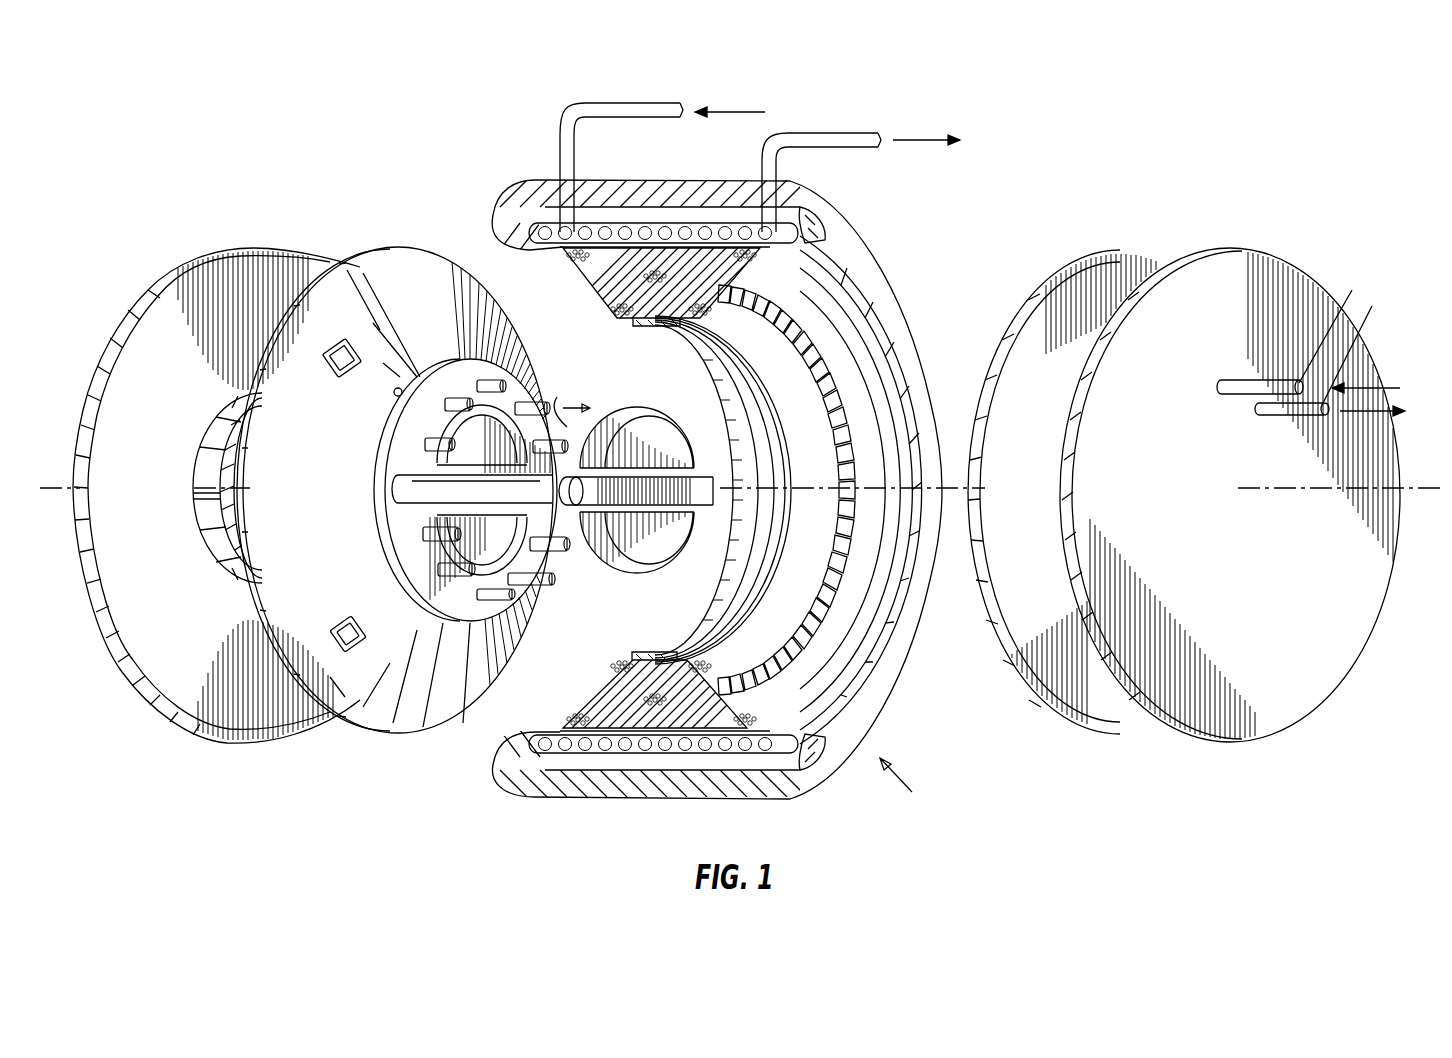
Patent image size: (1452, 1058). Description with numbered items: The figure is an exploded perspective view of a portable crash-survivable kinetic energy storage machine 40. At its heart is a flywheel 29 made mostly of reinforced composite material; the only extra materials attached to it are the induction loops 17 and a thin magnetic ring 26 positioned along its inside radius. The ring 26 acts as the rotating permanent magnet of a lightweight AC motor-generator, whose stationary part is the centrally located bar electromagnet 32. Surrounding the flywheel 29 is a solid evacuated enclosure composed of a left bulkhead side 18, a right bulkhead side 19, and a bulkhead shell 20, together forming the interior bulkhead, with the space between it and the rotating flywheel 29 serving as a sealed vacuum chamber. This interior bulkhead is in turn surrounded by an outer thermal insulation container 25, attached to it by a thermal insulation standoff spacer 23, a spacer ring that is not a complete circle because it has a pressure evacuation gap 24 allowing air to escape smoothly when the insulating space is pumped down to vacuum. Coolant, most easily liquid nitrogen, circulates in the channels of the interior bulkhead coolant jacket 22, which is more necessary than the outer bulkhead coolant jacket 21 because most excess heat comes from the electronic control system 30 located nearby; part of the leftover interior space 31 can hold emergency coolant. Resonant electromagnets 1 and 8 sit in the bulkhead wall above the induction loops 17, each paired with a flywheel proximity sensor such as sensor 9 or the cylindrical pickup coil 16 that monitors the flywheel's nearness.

The resonant electromagnet 1 is at (345, 340).
The resonant electromagnet unit 8 is at (337, 620).
The flywheel proximity sensor 9 is at (396, 396).
The cylindrical coil 16 is at (398, 590).
The induction loops 17 is at (830, 375).
The left bulkhead side 18 is at (405, 262).
The right bulkhead side 19 is at (1055, 690).
The bulkhead shell 20 is at (780, 240).
The outer bulkhead coolant jacket 21 is at (826, 131).
The interior bulkhead coolant jacket 22 is at (505, 388).
The thermal insulation standoff spacer 23 is at (205, 520).
The pressure evacuation gap 24 is at (195, 490).
The outer thermal insulation container 25 is at (268, 718).
The thin magnetic ring 26 is at (705, 355).
The flywheel 29 is at (618, 280).
The electronic control system 30 is at (665, 454).
The leftover interior space 31 is at (655, 548).
The bar electromagnet 32 is at (710, 478).
The kinetic energy storage machine 40 is at (911, 788).